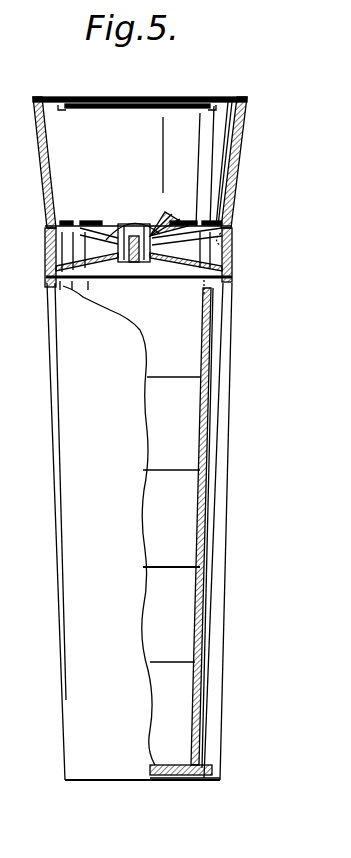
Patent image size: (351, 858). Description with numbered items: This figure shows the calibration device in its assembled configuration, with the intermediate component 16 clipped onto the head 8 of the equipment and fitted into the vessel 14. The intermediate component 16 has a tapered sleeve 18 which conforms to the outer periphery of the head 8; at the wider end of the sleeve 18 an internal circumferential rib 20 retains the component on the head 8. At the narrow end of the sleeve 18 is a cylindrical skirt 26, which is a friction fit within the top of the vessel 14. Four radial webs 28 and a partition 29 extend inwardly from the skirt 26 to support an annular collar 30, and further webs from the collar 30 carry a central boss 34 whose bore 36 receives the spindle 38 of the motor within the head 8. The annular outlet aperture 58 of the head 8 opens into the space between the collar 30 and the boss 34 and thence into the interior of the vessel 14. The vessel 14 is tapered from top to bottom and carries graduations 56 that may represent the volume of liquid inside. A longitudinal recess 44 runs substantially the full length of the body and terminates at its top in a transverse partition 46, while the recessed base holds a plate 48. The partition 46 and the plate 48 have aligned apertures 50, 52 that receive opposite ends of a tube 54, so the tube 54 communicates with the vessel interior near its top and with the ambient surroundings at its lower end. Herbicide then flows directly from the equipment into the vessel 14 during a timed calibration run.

The head 8 is at (127, 153).
The vessel 14 is at (52, 650).
The intermediate component 16 is at (38, 169).
The sleeve 18 is at (238, 148).
The internal circumferential rib 20 is at (224, 97).
The cylindrical skirt 26 is at (232, 224).
The radial webs 28 is at (185, 272).
The partition 29 is at (93, 283).
The annular collar 30 is at (148, 262).
The central boss 34 is at (90, 226).
The bore 36 is at (140, 260).
The spindle 38 is at (140, 222).
The longitudinal recess 44 is at (221, 458).
The transverse partition 46 is at (232, 280).
The plate 48 is at (178, 778).
The aperture 50 is at (213, 292).
The aperture 52 is at (203, 765).
The tube 54 is at (208, 567).
The graduations 56 is at (167, 378).
The annular outlet aperture 58 is at (170, 212).